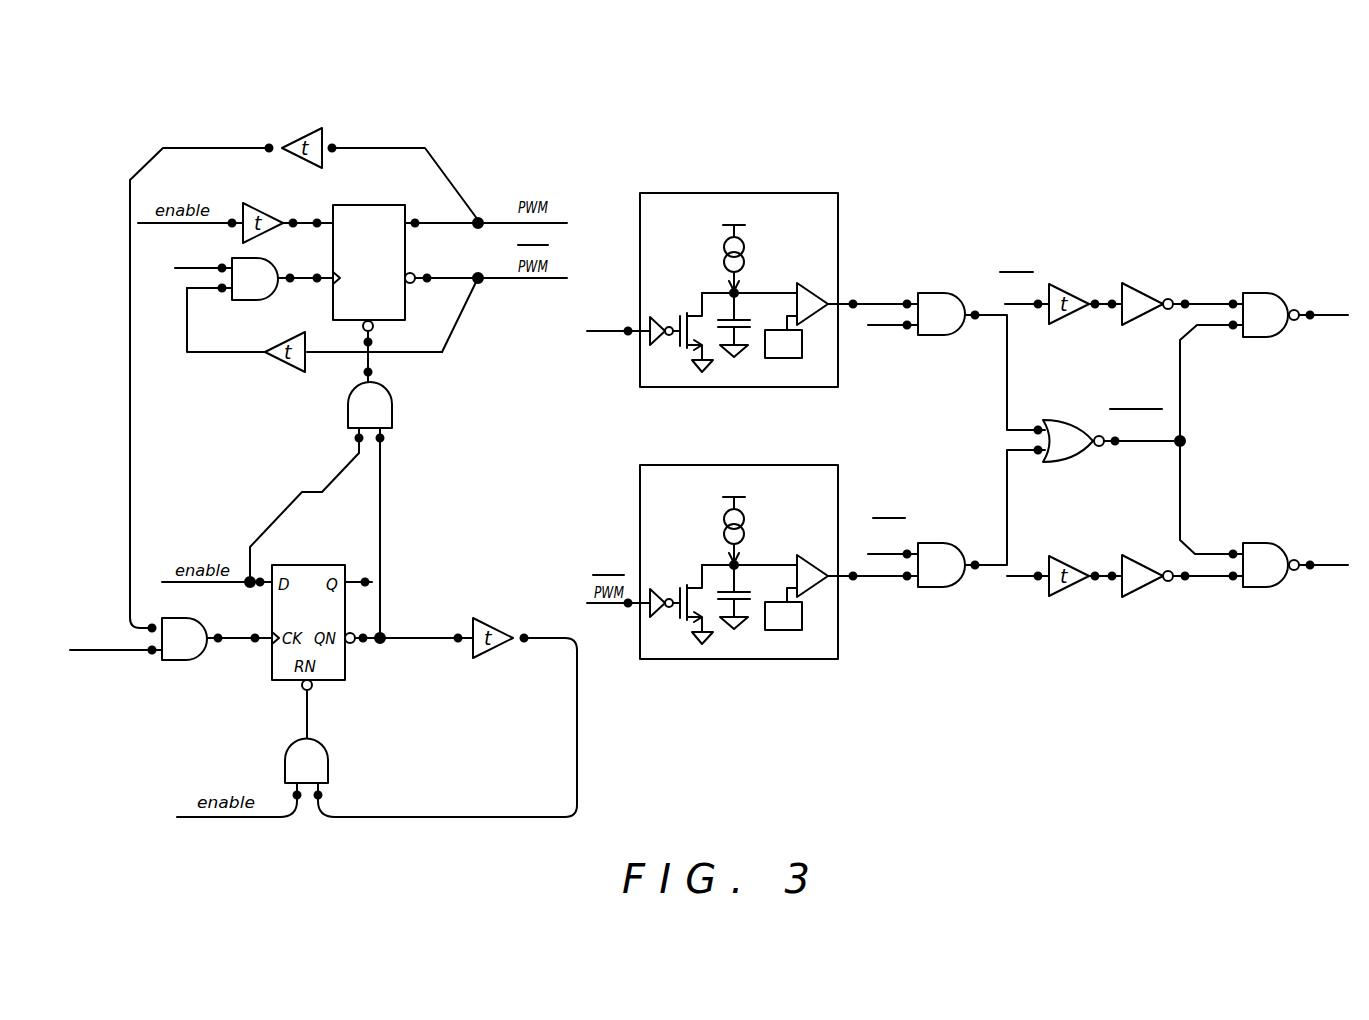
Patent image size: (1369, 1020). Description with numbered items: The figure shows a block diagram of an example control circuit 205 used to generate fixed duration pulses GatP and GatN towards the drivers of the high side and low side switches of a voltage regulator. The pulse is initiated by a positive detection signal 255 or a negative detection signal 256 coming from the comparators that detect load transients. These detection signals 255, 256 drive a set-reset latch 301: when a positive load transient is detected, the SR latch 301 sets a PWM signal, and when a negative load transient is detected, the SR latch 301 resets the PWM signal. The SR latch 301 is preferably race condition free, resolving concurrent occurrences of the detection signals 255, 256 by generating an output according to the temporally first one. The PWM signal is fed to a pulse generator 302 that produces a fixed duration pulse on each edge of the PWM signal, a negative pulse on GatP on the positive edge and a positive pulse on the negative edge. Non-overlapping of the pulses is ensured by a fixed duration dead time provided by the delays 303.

The control circuit 205 is at (995, 680).
The positive detection signal 255 is at (198, 270).
The negative detection signal 256 is at (90, 650).
The set-reset latch 301 is at (368, 205).
The pulse generator 302 is at (870, 174).
The delays 303 is at (304, 128).